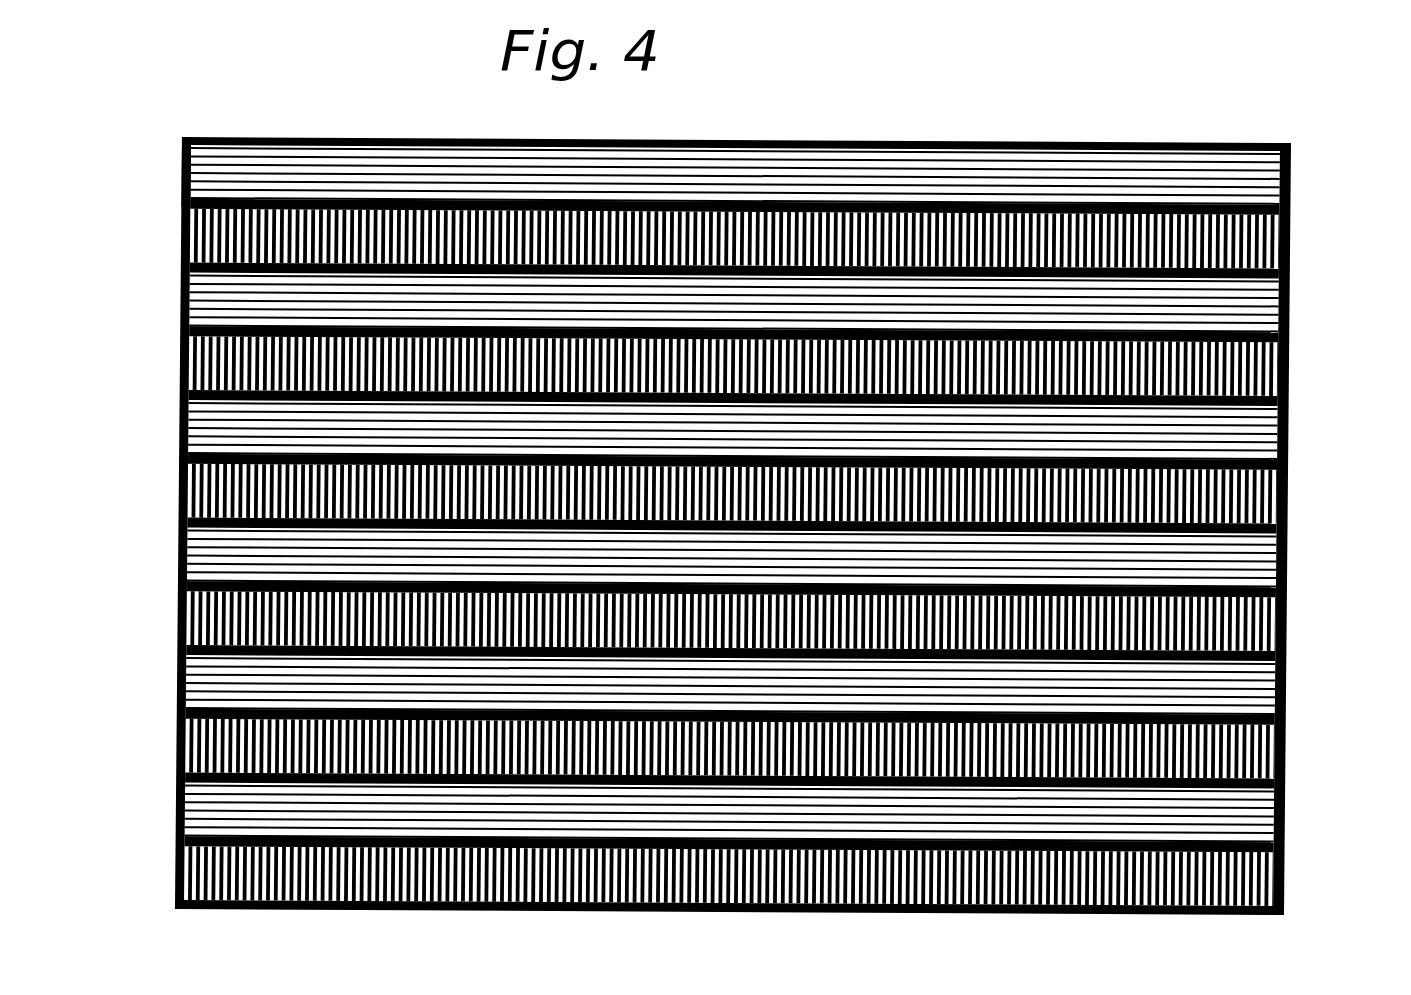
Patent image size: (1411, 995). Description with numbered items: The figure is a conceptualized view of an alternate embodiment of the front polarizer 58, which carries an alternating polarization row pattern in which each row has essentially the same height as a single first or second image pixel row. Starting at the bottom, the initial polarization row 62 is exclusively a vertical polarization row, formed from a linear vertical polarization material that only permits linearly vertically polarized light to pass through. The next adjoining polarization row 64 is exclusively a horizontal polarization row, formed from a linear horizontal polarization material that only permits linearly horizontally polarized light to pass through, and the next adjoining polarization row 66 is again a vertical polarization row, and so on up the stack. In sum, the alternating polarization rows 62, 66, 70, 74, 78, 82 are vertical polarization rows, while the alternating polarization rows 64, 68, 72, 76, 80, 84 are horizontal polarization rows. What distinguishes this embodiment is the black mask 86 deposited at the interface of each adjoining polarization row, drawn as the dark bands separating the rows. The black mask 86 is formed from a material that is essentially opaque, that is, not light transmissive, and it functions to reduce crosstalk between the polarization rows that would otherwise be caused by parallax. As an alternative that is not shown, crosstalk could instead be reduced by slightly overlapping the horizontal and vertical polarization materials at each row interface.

The front polarizer 58 is at (358, 155).
The initial polarization row 62 is at (1250, 874).
The polarization row 64 is at (176, 804).
The polarization row 66 is at (1250, 747).
The polarization row 68 is at (177, 676).
The polarization row 70 is at (1252, 619).
The polarization row 72 is at (178, 550).
The polarization row 74 is at (1252, 492).
The polarization row 76 is at (179, 422).
The polarization row 78 is at (1252, 364).
The polarization row 80 is at (181, 294).
The polarization row 82 is at (1252, 237).
The polarization row 84 is at (182, 167).
The black mask 86 is at (180, 206).